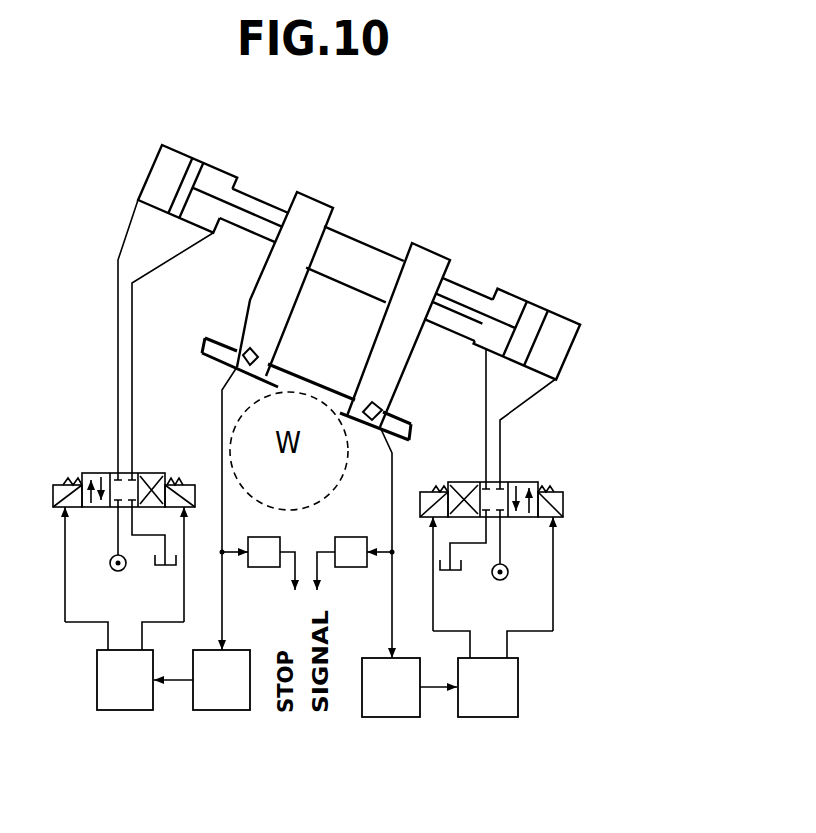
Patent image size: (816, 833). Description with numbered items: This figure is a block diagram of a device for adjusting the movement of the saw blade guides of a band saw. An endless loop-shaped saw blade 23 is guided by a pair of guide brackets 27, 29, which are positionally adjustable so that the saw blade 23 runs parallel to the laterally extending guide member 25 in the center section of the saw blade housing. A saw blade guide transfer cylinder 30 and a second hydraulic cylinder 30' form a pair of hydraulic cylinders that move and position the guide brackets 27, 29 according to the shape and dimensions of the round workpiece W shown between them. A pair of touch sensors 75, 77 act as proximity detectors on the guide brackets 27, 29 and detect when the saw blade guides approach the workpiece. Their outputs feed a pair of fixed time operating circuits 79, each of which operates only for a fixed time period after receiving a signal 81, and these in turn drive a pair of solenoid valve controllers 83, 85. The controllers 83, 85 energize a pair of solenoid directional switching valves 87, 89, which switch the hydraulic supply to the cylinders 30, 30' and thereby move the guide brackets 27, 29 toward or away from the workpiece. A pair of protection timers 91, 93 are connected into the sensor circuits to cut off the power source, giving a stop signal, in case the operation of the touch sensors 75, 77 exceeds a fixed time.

The saw blade guide transfer cylinder 30 is at (213, 170).
The guide bracket 29 is at (318, 200).
The guide member 25 is at (381, 241).
The guide bracket 27 is at (440, 255).
The hydraulic cylinder 30' is at (502, 311).
The saw blade 23 is at (296, 376).
The touch sensor 77 is at (249, 343).
The touch sensor 75 is at (375, 402).
The solenoid directional switching valve 89 is at (93, 472).
The solenoid directional switching valve 87 is at (520, 482).
The protection timer 93 is at (260, 568).
The protection timer 91 is at (348, 568).
The solenoid valve controller 85 is at (127, 711).
The signal 81 is at (223, 713).
The fixed time operating circuit 79 is at (392, 719).
The solenoid valve controller 83 is at (492, 719).